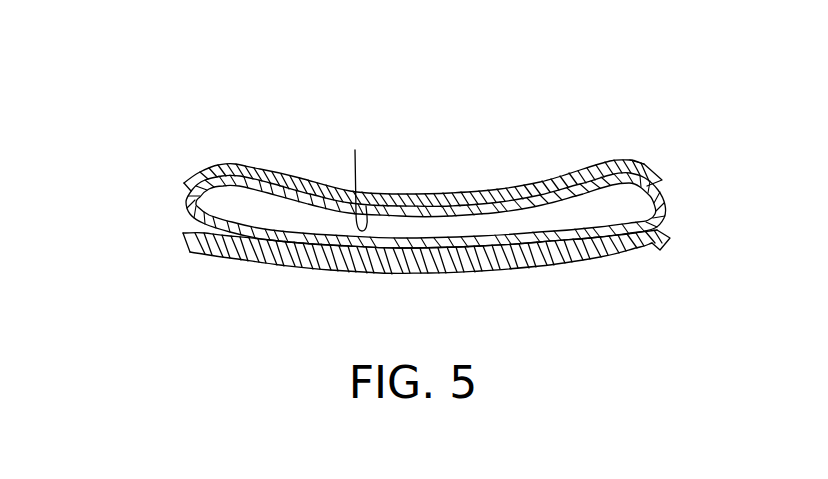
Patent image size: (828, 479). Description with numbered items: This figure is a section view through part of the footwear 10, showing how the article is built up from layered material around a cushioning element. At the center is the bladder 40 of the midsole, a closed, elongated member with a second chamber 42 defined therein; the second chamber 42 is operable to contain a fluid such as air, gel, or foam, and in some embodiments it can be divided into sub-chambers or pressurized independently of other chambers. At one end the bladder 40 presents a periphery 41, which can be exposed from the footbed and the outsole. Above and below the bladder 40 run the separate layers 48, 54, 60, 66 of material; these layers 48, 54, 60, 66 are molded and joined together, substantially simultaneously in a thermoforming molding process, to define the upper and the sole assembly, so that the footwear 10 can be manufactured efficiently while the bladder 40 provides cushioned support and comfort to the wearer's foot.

The footwear 10 is at (258, 150).
The bladder 40 is at (177, 212).
The periphery 41 is at (673, 207).
The second chamber 42 is at (355, 150).
The layer 48 is at (483, 195).
The layer 54 is at (562, 195).
The layer 60 is at (562, 245).
The layer 66 is at (473, 262).